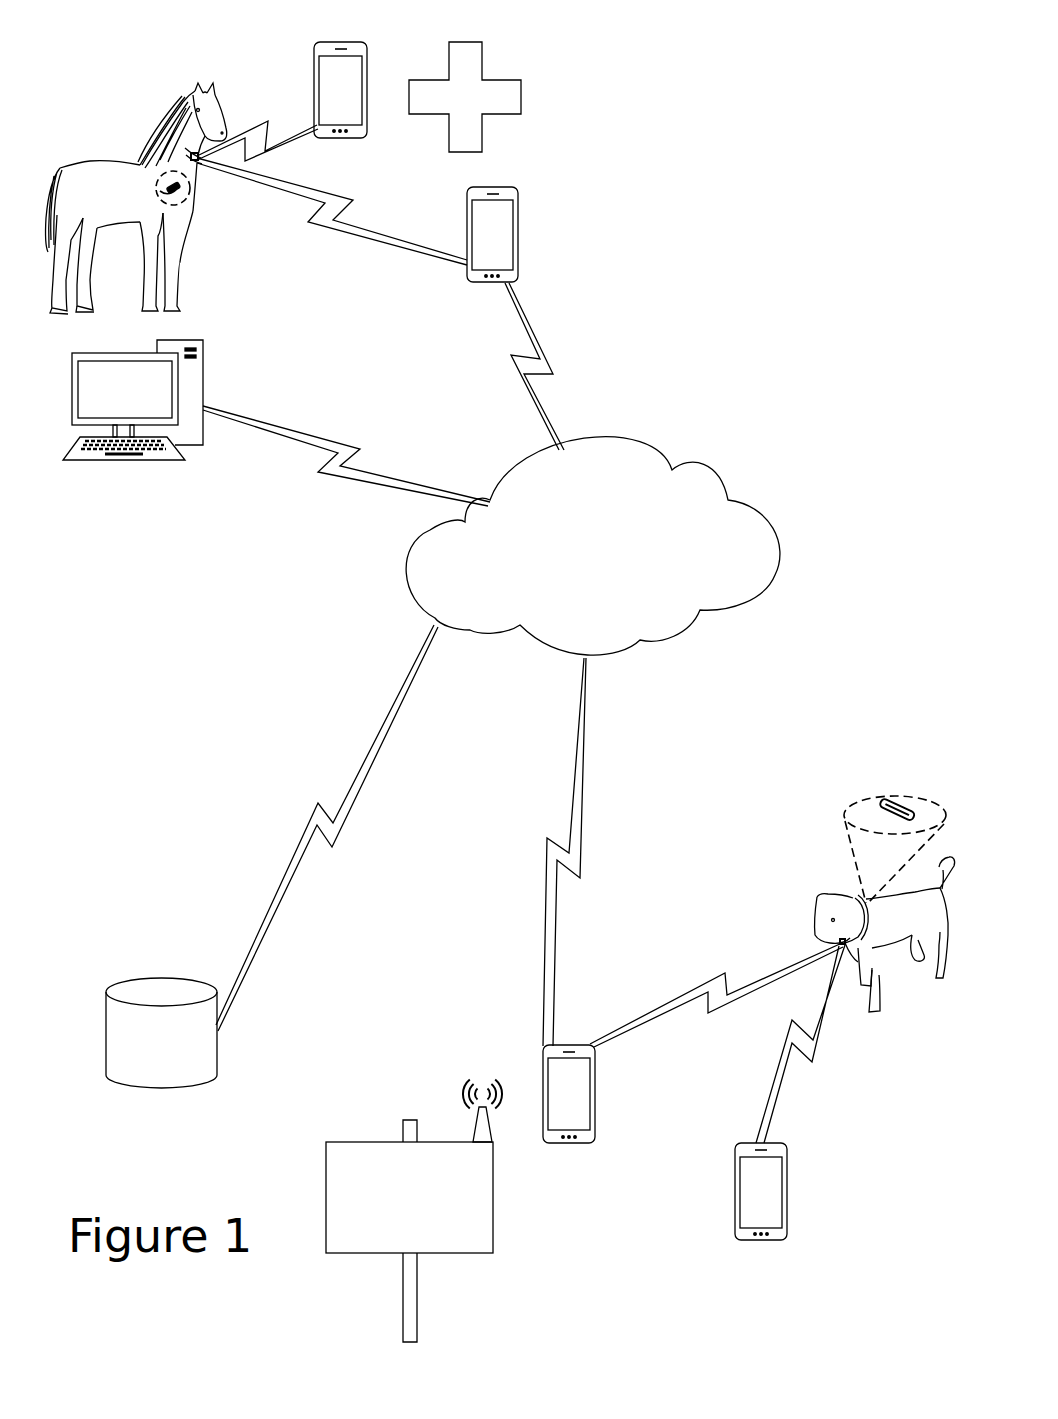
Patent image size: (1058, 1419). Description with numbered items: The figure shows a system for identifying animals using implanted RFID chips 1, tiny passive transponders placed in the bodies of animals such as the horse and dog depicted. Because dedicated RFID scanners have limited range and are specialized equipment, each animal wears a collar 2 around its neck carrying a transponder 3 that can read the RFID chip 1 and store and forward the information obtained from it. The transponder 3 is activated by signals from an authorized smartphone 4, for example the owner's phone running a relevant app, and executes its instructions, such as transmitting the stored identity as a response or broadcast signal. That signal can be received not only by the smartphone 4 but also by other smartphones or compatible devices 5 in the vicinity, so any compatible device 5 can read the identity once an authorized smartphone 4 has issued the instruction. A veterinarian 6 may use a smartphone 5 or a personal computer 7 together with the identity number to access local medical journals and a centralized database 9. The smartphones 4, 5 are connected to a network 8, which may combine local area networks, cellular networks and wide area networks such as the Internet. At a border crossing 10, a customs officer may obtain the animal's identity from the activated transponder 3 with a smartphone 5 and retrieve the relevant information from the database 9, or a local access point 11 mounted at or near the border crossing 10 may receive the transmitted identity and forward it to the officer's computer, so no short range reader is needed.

The RFID chip 1 is at (170, 189).
The collar 2 is at (184, 150).
The transponder 3 is at (197, 163).
The smartphone 4 is at (332, 52).
The smartphone or compatible device 5 is at (498, 195).
The veterinarian 6 is at (470, 46).
The personal computer 7 is at (133, 421).
The network 8 is at (593, 546).
The database 9 is at (161, 1033).
The border crossing 10 is at (483, 1227).
The access point 11 is at (475, 1130).